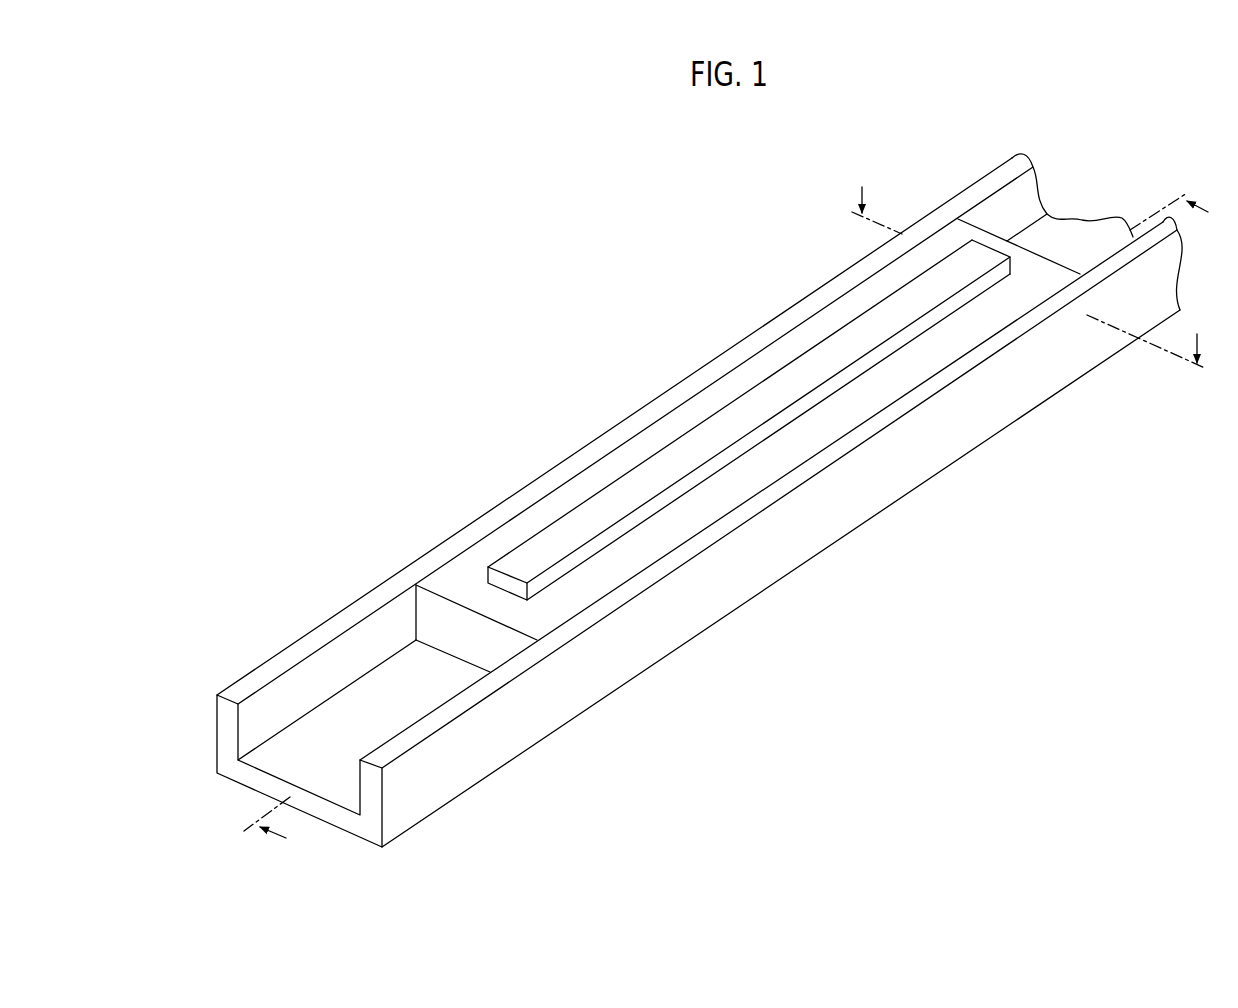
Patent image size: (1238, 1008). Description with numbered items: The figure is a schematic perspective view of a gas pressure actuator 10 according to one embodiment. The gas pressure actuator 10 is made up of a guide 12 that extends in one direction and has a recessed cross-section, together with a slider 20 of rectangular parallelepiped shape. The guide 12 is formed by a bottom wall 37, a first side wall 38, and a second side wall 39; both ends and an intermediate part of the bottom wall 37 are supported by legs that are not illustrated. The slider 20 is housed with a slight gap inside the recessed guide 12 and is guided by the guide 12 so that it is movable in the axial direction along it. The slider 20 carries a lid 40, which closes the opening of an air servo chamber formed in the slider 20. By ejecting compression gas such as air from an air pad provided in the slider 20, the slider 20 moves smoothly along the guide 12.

The gas pressure actuator 10 is at (644, 302).
The guide 12 is at (473, 768).
The slider 20 is at (1035, 268).
The bottom wall 37 is at (320, 757).
The first side wall 38 is at (418, 738).
The second side wall 39 is at (340, 625).
The lid 40 is at (942, 275).